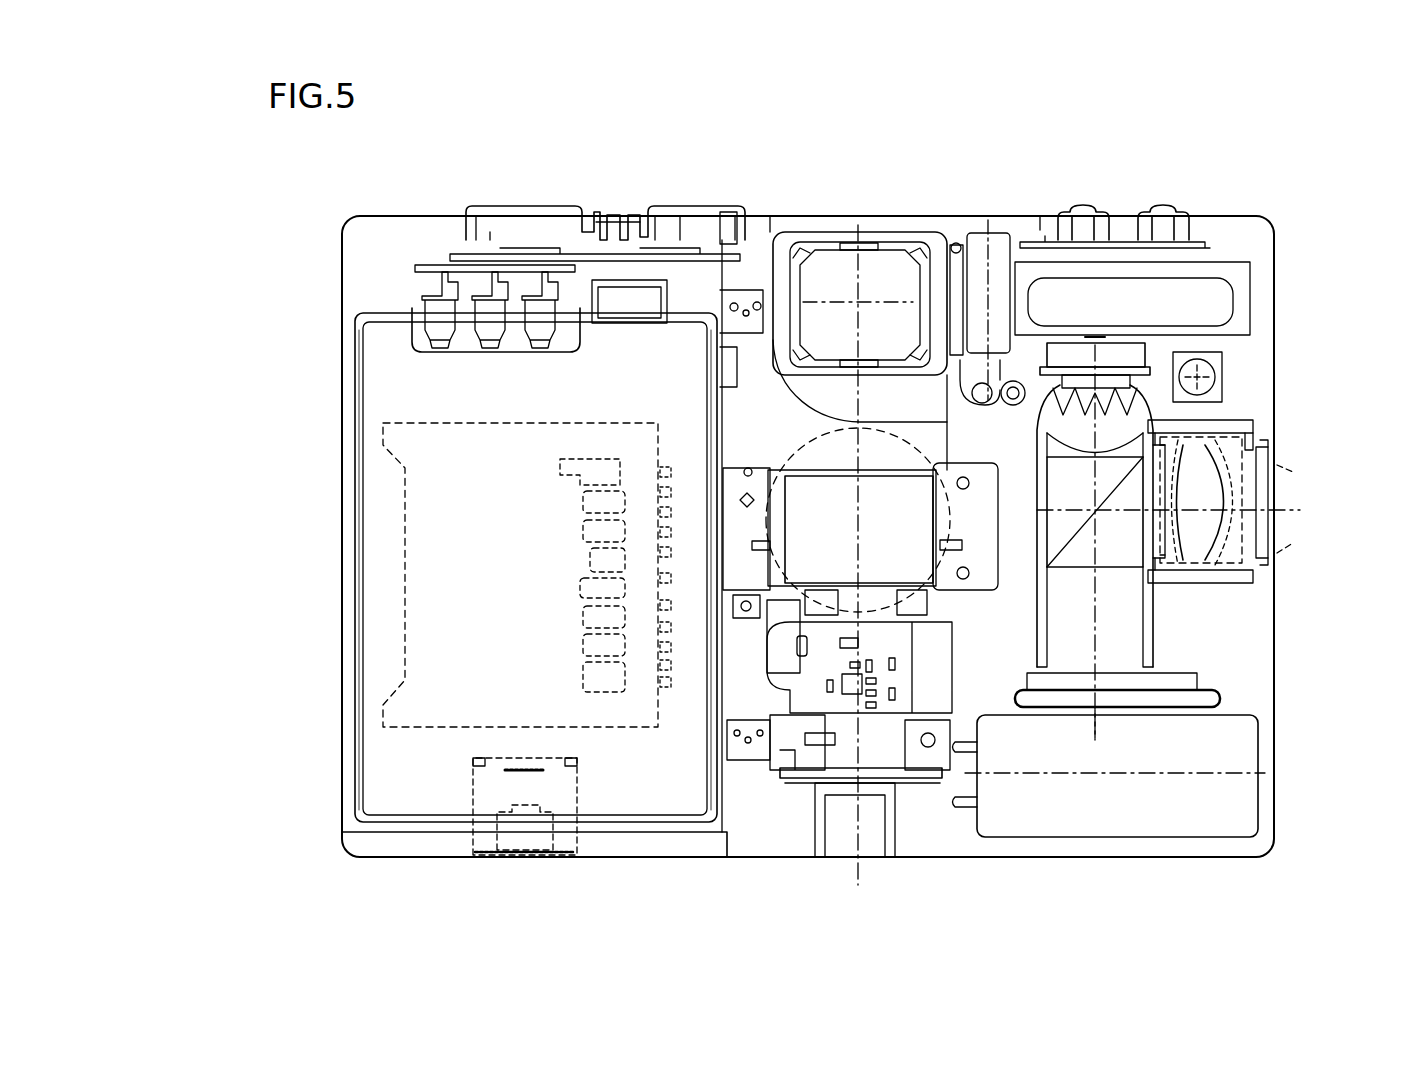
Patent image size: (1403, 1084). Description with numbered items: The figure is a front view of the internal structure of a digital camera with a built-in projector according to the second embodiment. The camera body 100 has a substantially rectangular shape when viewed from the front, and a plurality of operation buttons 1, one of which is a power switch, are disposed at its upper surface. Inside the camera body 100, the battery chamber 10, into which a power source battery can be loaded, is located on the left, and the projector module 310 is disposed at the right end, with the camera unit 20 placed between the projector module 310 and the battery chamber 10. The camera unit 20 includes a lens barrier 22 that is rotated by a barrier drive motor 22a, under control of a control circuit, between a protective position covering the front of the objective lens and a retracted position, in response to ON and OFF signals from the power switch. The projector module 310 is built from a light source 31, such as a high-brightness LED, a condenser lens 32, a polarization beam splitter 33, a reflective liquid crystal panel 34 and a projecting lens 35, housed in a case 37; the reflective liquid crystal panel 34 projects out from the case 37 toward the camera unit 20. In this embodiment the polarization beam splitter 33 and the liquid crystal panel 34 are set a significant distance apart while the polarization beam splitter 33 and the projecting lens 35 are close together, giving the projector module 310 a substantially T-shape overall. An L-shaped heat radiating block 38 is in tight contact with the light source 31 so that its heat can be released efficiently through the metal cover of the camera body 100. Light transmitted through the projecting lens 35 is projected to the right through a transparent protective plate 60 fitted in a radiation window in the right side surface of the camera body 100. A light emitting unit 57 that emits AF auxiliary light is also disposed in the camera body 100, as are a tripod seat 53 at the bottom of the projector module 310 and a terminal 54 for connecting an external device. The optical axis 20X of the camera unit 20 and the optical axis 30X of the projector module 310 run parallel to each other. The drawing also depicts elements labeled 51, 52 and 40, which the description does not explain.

The camera body 100 is at (300, 358).
The operation buttons 1 is at (683, 206).
The lens barrier 22 is at (758, 238).
The camera unit 20 is at (876, 220).
The barrier drive motor 22a is at (988, 285).
The cover plate 51 is at (1115, 297).
The projector module 310 is at (1134, 336).
The heat radiating block 38 is at (1130, 352).
The light source 31 is at (1140, 372).
The light emitting unit 57 is at (1222, 377).
The condenser lens 32 is at (1127, 430).
The projecting lens 35 is at (1212, 480).
The transparent protective plate 60 is at (1268, 497).
The case 37 is at (1210, 573).
The polarization beam splitter 33 is at (1117, 552).
The reflective liquid crystal panel 34 is at (1160, 683).
The optical axis 30X is at (1098, 717).
The battery 52 is at (1050, 808).
The tripod seat 53 is at (845, 835).
The optical axis 20X is at (862, 737).
The battery chamber 10 is at (627, 795).
The terminal 54 is at (477, 843).
The circuit board 40 is at (405, 542).